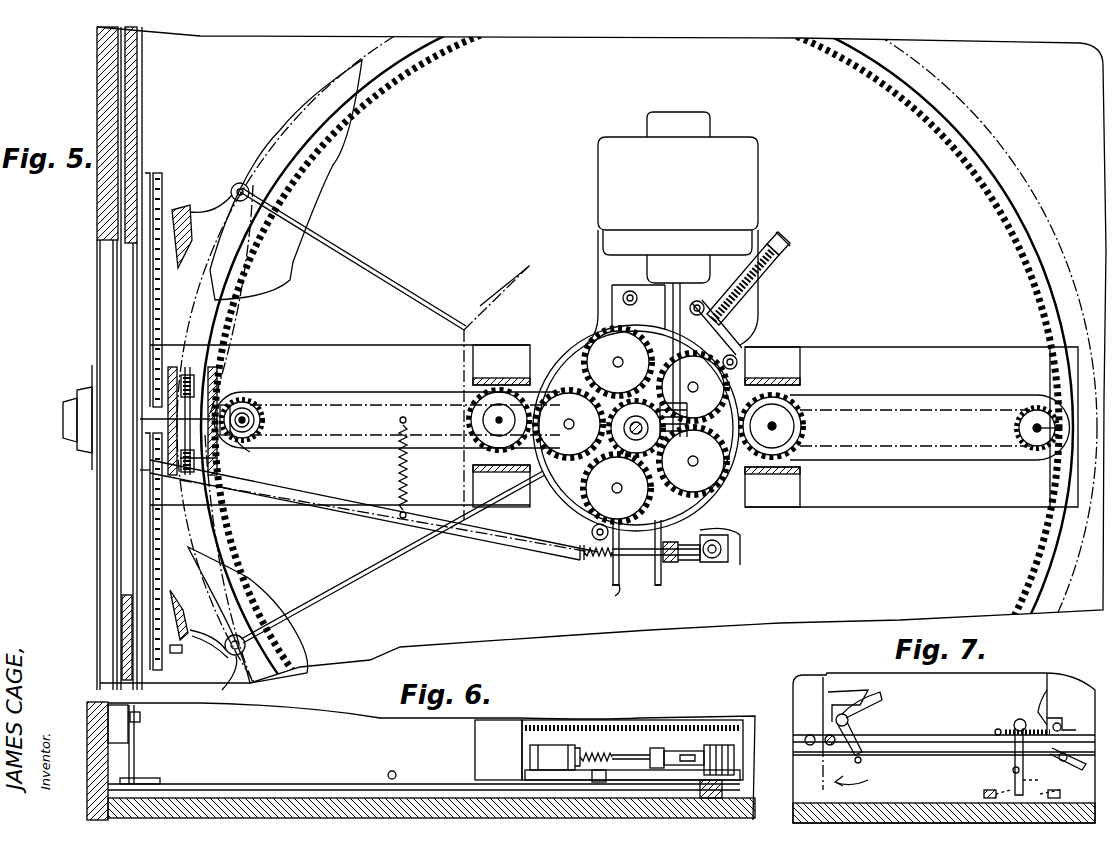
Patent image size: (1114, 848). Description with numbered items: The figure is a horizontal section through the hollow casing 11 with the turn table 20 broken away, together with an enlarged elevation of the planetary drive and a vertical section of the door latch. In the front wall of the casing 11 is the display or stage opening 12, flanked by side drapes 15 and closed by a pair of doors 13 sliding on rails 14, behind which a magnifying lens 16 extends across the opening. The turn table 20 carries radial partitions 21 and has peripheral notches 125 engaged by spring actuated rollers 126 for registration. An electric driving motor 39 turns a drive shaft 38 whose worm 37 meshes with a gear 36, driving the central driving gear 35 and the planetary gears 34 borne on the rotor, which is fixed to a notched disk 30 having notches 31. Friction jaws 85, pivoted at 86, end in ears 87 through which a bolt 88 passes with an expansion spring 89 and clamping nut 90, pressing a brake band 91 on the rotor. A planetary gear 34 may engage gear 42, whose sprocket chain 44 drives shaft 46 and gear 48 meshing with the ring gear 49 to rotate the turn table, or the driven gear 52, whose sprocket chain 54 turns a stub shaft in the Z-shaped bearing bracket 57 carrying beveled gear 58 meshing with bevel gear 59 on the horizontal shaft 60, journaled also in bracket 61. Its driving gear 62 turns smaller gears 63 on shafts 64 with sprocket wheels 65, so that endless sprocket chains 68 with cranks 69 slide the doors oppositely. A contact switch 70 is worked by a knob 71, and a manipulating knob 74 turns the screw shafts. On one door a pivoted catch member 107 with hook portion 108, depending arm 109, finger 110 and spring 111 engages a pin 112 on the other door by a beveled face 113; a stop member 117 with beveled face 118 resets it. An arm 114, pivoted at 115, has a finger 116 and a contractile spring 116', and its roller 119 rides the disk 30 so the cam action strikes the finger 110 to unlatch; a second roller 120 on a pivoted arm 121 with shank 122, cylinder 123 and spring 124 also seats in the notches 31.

In FIG. 5, the hollow casing 11 is at (97, 225).
In FIG. 5, the display or stage opening 12 is at (238, 184).
In FIG. 5, the door or closure member 13 is at (143, 138).
In FIG. 6, the door or closure member 13 is at (108, 718).
In FIG. 7, the door or closure member 13 is at (1078, 686).
In FIG. 5, the rail or track 14 is at (137, 292).
In FIG. 7, the rail or track 14 is at (922, 748).
In FIG. 7, the side drape 15 is at (944, 700).
In FIG. 5, the magnifying lens 16 is at (188, 429).
In FIG. 5, the platform or turn table 20 is at (330, 160).
In FIG. 5, the partition or dividing wall 21 is at (290, 620).
In FIG. 5, the disk 30 is at (637, 556).
In FIG. 6, the disk 30 is at (695, 770).
In FIG. 5, the notch 31 is at (548, 358).
In FIG. 5, the planetary gear 34 is at (631, 425).
In FIG. 5, the central driving gear 35 is at (600, 492).
In FIG. 5, the gear 36 is at (608, 430).
In FIG. 5, the worm 37 is at (680, 451).
In FIG. 5, the drive shaft 38 is at (673, 348).
In FIG. 5, the electric driving motor 39 is at (678, 197).
In FIG. 5, the gear 42 is at (805, 428).
In FIG. 5, the sprocket chain 44 is at (872, 392).
In FIG. 5, the vertically disposed shaft 46 is at (1037, 420).
In FIG. 5, the gear 48 is at (1032, 445).
In FIG. 5, the ring gear 49 is at (1038, 332).
In FIG. 5, the driven gear 52 is at (470, 422).
In FIG. 5, the sprocket chain 54 is at (356, 388).
In FIG. 5, the Z-shaped bearing bracket 57 is at (196, 458).
In FIG. 5, the beveled gear 58 is at (262, 418).
In FIG. 5, the bevel gear 59 is at (250, 445).
In FIG. 5, the horizontally disposed shaft 60 is at (232, 405).
In FIG. 5, the bracket 61 is at (178, 409).
In FIG. 5, the driving gear 62 is at (194, 385).
In FIG. 5, the smaller gear 63 is at (385, 516).
In FIG. 5, the shaft 64 is at (200, 380).
In FIG. 5, the sprocket wheel 65 is at (178, 410).
In FIG. 5, the endless sprocket chain 68 is at (165, 318).
In FIG. 5, the crank 69 is at (150, 176).
In FIG. 5, the electrical contact switch 70 is at (78, 445).
In FIG. 5, the knob 71 is at (90, 372).
In FIG. 5, the manipulating knob 74 is at (63, 410).
In FIG. 5, the arcuate shaped jaw 85 is at (592, 538).
In FIG. 6, the arcuate shaped jaw 85 is at (560, 745).
In FIG. 5, the pivotal connection 86 is at (623, 298).
In FIG. 5, the ear 87 is at (655, 588).
In FIG. 5, the bolt 88 is at (688, 562).
In FIG. 5, the expansion spring 89 is at (608, 560).
In FIG. 6, the expansion spring 89 is at (595, 752).
In FIG. 5, the adjustable clamping nut 90 is at (672, 564).
In FIG. 6, the adjustable clamping nut 90 is at (665, 752).
In FIG. 5, the friction or brake band 91 is at (535, 560).
In FIG. 6, the pivoted catch member 107 is at (142, 720).
In FIG. 7, the hook portion 108 is at (1072, 715).
In FIG. 6, the depending arm 109 is at (140, 750).
In FIG. 7, the depending arm 109 is at (1012, 760).
In FIG. 7, the finger 110 is at (1026, 784).
In FIG. 7, the spring 111 is at (1008, 728).
In FIG. 7, the pin 112 is at (1048, 706).
In FIG. 7, the beveled face 113 is at (1062, 728).
In FIG. 5, the arm 114 is at (495, 548).
In FIG. 6, the arm 114 is at (232, 784).
In FIG. 7, the arm 114 is at (990, 796).
In FIG. 5, the pivot 115 is at (730, 565).
In FIG. 6, the pivot 115 is at (736, 758).
In FIG. 5, the finger 116 is at (92, 484).
In FIG. 6, the finger 116 is at (157, 768).
In FIG. 5, the contractile spring 116' is at (426, 467).
In FIG. 6, the contractile spring 116' is at (374, 762).
In FIG. 7, the stop member 117 is at (812, 698).
In FIG. 7, the beveled face 118 is at (882, 690).
In FIG. 5, the roller 119 is at (582, 562).
In FIG. 6, the roller 119 is at (620, 770).
In FIG. 5, the roller 120 is at (738, 360).
In FIG. 5, the pivoted arm 121 is at (322, 228).
In FIG. 5, the shank 122 is at (464, 300).
In FIG. 5, the cylinder 123 is at (770, 282).
In FIG. 5, the spring 124 is at (770, 250).
In FIG. 5, the notch or indentation 125 is at (253, 185).
In FIG. 5, the spring actuated roller 126 is at (224, 679).